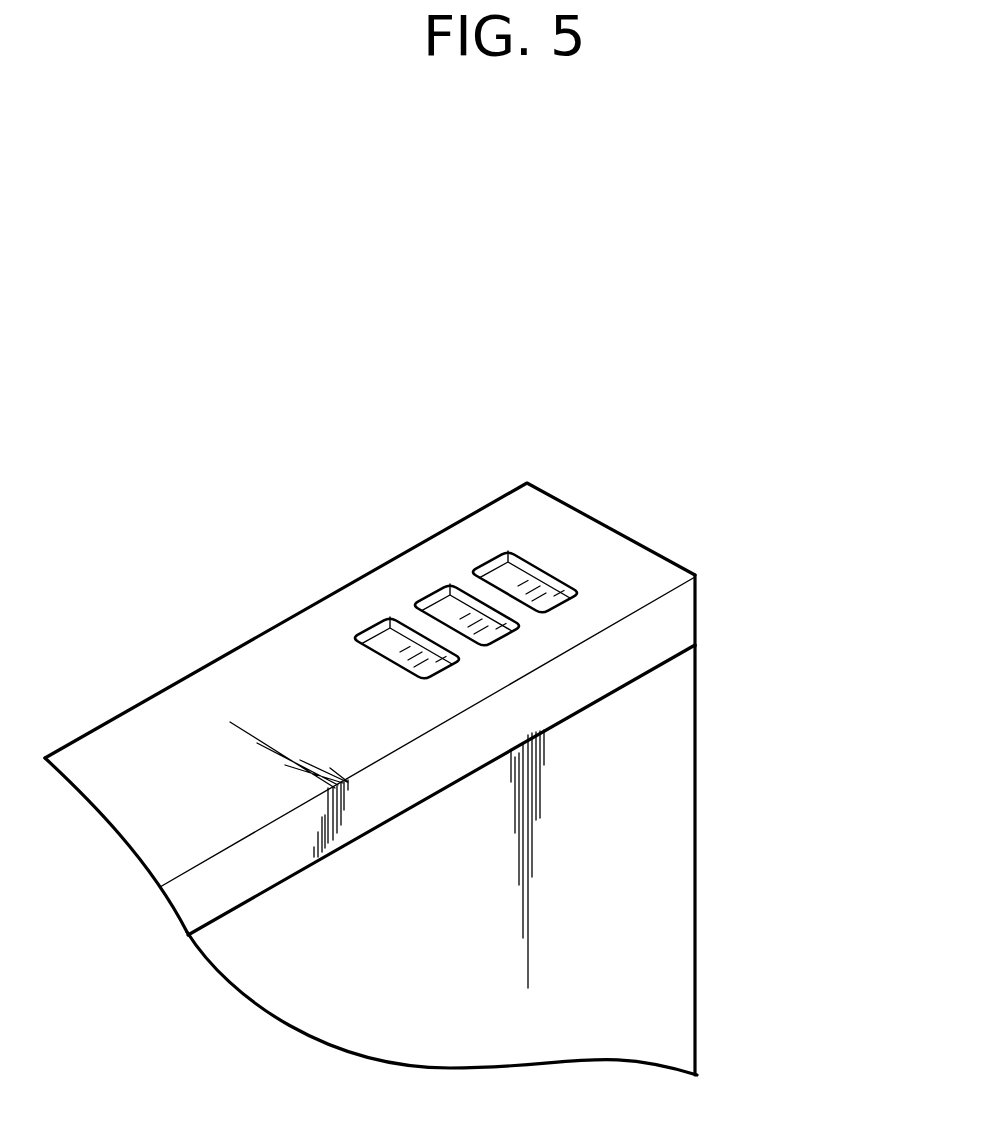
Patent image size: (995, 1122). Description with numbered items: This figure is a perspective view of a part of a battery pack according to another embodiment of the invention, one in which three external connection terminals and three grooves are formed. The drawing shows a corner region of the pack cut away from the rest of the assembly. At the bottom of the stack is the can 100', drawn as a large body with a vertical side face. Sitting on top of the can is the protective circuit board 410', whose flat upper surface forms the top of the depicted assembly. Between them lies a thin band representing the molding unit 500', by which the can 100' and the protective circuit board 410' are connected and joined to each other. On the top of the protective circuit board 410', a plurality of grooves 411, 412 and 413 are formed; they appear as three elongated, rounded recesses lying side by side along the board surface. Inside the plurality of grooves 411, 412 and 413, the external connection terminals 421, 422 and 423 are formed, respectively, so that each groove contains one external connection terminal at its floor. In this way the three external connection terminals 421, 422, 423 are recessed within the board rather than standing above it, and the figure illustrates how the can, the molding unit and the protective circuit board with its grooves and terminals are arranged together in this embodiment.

The protective circuit board 410' is at (403, 661).
The molding unit 500' is at (524, 777).
The can 100' is at (454, 860).
The groove 411 is at (370, 622).
The groove 412 is at (432, 593).
The groove 413 is at (490, 555).
The external connection terminal 421 is at (433, 667).
The external connection terminal 422 is at (492, 628).
The external connection terminal 423 is at (548, 596).